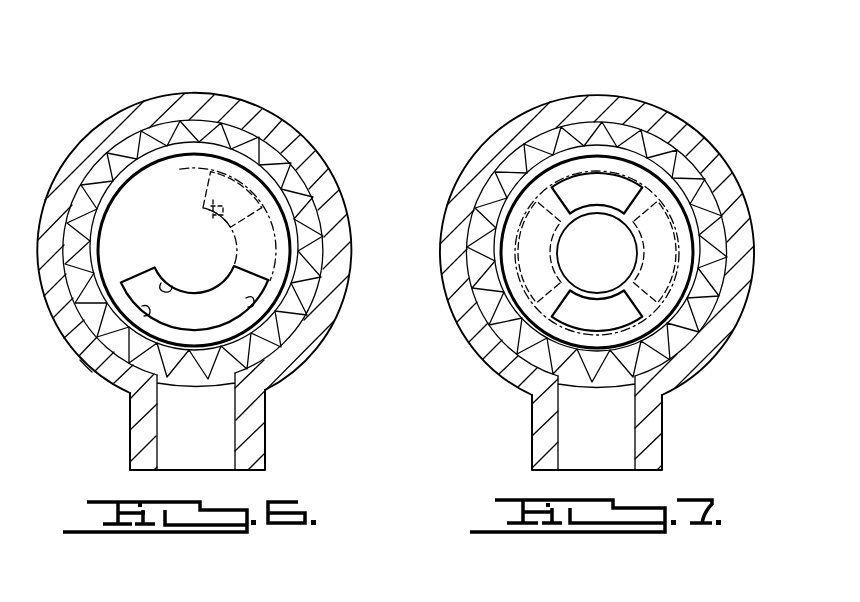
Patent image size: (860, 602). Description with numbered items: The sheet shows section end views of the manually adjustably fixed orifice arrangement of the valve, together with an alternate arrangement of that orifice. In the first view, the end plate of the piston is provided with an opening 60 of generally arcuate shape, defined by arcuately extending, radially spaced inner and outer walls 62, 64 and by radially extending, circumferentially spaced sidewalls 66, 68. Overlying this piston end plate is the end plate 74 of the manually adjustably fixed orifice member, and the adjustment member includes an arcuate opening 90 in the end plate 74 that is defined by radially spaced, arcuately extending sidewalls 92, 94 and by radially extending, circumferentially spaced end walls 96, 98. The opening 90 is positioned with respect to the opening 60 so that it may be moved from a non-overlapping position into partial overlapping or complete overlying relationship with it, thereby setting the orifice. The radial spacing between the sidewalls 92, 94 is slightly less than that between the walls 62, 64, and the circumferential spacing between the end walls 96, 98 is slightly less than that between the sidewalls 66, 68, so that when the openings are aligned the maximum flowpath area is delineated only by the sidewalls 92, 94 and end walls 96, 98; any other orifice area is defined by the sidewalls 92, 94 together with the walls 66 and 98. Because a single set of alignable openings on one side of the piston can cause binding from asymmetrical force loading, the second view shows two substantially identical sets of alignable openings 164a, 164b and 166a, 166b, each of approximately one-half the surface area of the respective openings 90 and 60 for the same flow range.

In FIG. 6, the opening 60 is at (255, 285).
In FIG. 6, the inner wall 62 is at (212, 210).
In FIG. 6, the outer wall 64 is at (320, 180).
In FIG. 6, the sidewall 66 is at (283, 378).
In FIG. 6, the sidewall 68 is at (214, 183).
In FIG. 6, the end plate 74 is at (137, 197).
In FIG. 6, the arcuate opening 90 is at (200, 322).
In FIG. 6, the sidewall 92 is at (167, 287).
In FIG. 6, the sidewall 94 is at (86, 366).
In FIG. 6, the end wall 96 is at (142, 309).
In FIG. 6, the end wall 98 is at (250, 302).
In FIG. 7, the opening 164a is at (598, 178).
In FIG. 7, the opening 164b is at (622, 322).
In FIG. 7, the opening 166a is at (668, 214).
In FIG. 7, the opening 166b is at (516, 242).